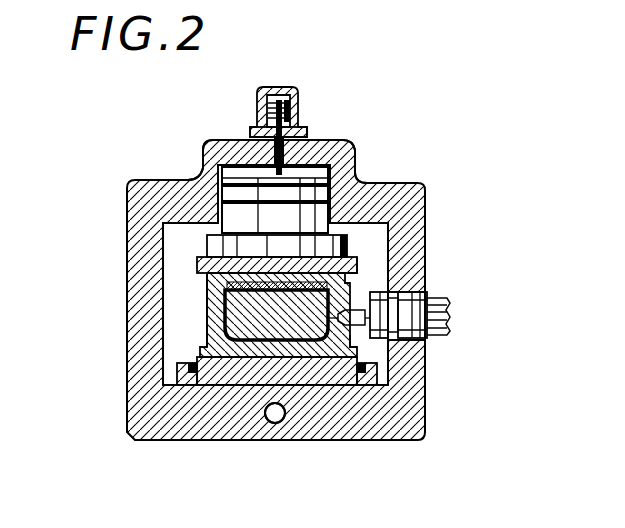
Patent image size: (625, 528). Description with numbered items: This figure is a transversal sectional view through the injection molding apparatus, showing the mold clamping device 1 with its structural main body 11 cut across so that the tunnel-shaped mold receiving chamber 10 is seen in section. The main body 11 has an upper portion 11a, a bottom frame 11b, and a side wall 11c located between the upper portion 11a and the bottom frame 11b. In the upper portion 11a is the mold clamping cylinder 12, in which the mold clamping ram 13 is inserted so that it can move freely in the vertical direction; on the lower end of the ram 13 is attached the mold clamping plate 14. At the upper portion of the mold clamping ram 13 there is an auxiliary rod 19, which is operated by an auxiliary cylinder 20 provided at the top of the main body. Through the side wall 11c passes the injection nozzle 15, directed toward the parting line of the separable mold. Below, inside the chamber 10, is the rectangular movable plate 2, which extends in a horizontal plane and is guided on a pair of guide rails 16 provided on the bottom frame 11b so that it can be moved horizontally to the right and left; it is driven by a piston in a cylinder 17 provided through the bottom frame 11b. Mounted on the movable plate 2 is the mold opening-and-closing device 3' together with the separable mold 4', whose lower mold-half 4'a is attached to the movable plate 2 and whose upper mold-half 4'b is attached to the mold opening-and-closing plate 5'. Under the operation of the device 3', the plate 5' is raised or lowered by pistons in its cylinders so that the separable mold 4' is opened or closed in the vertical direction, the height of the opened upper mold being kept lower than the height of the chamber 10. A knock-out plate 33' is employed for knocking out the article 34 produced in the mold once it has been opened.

The mold clamping device 1 is at (218, 138).
The movable plate 2 is at (209, 385).
The mold opening-and-closing device 3' is at (244, 203).
The separable mold 4' is at (261, 313).
The lower mold-half 4'a is at (246, 316).
The upper mold-half 4'b is at (149, 310).
The mold opening-and-closing plate 5' is at (364, 250).
The mold receiving chamber 10 is at (173, 244).
The main body 11 is at (352, 142).
The upper portion of the main body 11a is at (328, 138).
The bottom frame 11b is at (330, 428).
The side wall 11c is at (430, 228).
The mold clamping cylinder 12 is at (242, 176).
The mold clamping ram 13 is at (369, 179).
The mold clamping plate 14 is at (250, 282).
The injection nozzle 15 is at (350, 303).
The guide rails 16 is at (180, 372).
The cylinder 17 is at (275, 420).
The auxiliary rod 19 is at (300, 125).
The auxiliary cylinder 20 is at (262, 88).
The knock-out plate 33' is at (185, 162).
The article 34 is at (347, 352).